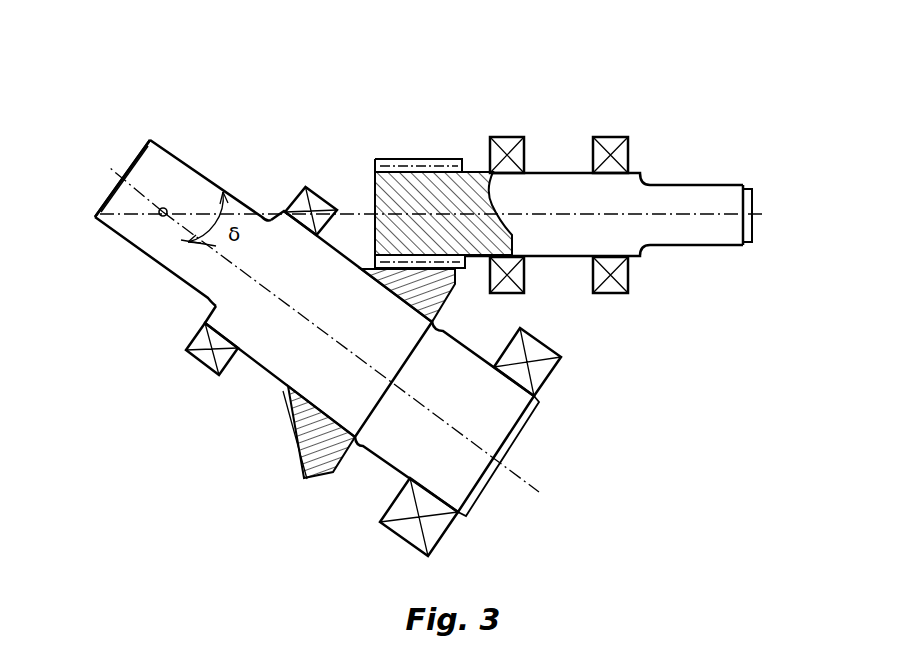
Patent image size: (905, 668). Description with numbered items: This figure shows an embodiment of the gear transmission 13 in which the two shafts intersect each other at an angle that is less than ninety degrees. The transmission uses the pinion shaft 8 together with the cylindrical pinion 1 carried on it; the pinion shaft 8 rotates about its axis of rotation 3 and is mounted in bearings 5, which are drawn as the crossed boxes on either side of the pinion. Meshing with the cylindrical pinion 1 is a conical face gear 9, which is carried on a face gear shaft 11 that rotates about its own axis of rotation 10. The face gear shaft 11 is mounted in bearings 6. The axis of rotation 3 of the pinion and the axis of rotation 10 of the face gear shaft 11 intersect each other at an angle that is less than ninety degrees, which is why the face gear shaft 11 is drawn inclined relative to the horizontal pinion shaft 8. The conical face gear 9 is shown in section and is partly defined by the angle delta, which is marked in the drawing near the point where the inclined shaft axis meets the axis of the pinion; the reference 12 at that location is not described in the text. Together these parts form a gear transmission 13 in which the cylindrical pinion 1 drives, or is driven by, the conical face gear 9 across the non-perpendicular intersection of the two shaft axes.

The cylindrical pinion 1 is at (423, 157).
The axis of rotation 3 is at (697, 216).
The bearings 5 is at (508, 137).
The bearings 6 is at (190, 355).
The pinion shaft 8 is at (628, 190).
The conical face gear 9 is at (280, 393).
The axis of rotation 10 is at (117, 175).
The face gear shaft 11 is at (180, 176).
The pivot point 12 is at (158, 216).
The gear transmission 13 is at (603, 347).